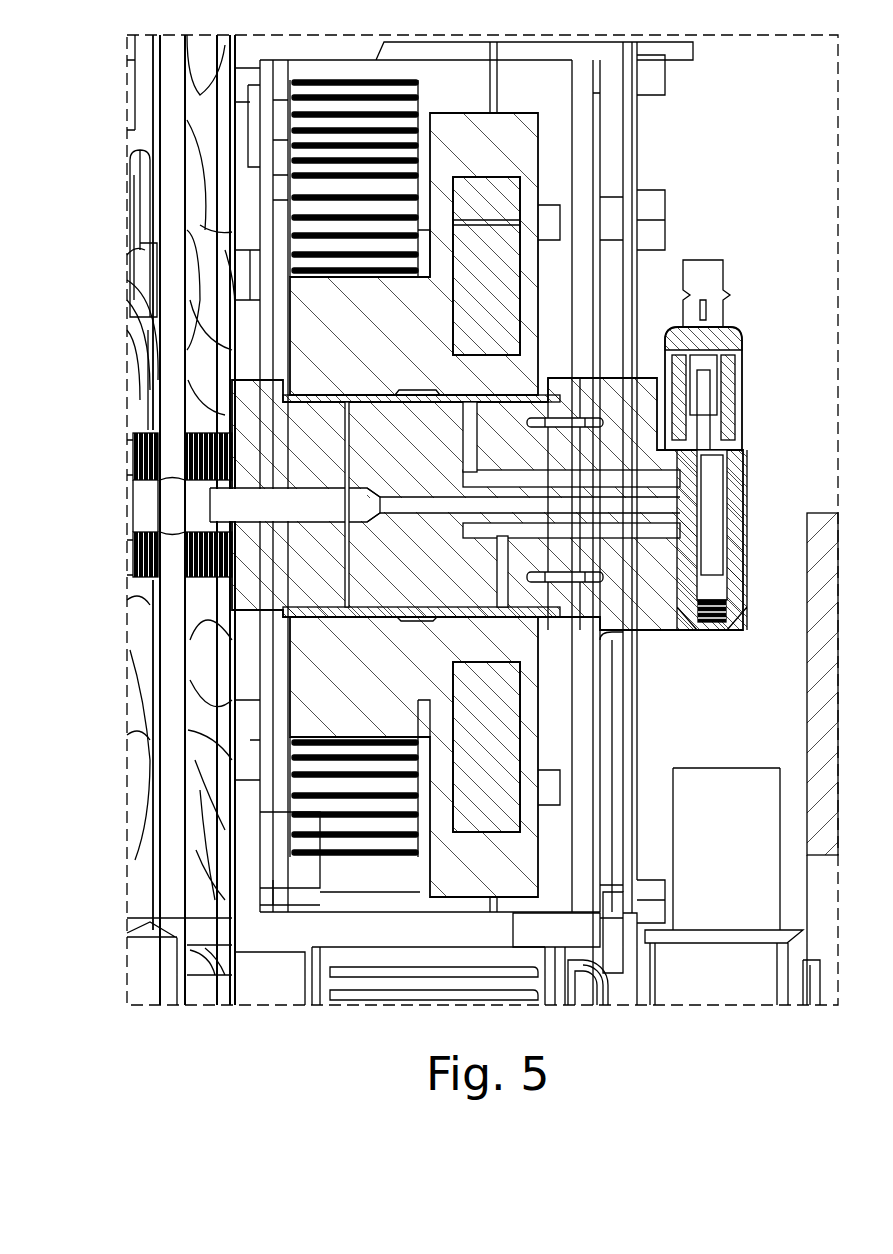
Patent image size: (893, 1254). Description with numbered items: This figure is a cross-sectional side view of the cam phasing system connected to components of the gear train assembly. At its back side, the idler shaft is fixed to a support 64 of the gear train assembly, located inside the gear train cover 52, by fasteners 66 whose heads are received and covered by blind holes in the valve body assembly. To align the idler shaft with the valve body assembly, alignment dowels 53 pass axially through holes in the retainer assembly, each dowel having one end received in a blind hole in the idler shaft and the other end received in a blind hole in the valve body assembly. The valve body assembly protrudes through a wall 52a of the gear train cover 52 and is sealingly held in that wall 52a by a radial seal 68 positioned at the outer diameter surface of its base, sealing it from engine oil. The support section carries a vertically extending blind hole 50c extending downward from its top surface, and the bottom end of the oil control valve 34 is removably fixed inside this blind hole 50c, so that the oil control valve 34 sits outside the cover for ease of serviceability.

The oil control valve 34 is at (748, 433).
The blind hole 50c is at (735, 505).
The gear train cover 52 is at (640, 768).
The wall 52a is at (615, 724).
The alignment dowels 53 is at (575, 422).
The support 64 is at (167, 385).
The fasteners 66 is at (128, 548).
The radial seal 68 is at (630, 335).